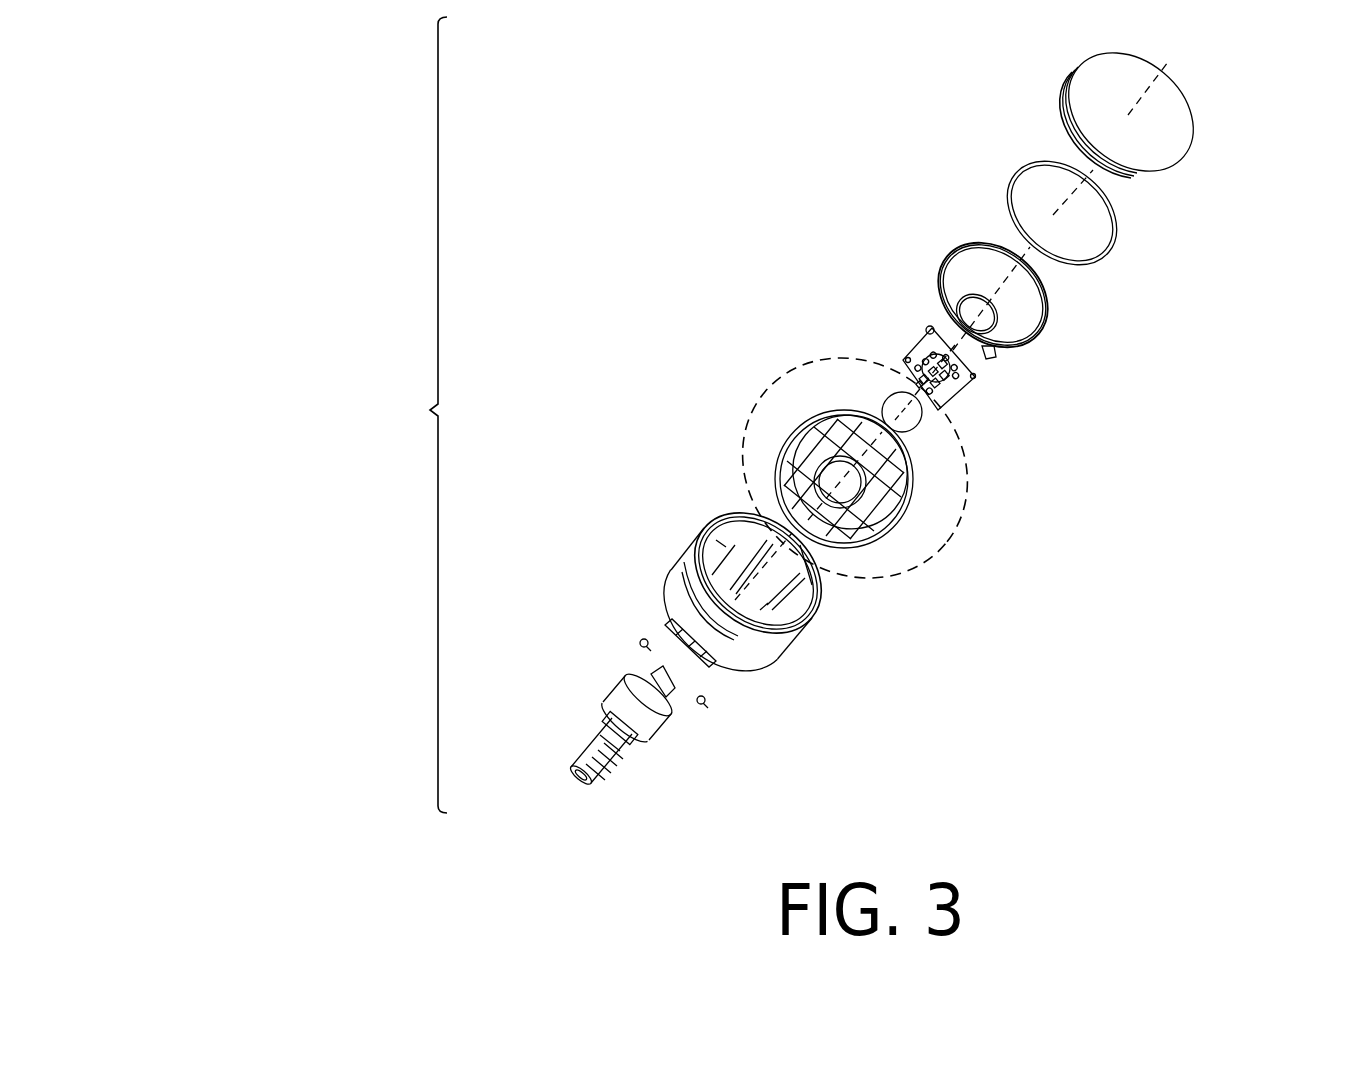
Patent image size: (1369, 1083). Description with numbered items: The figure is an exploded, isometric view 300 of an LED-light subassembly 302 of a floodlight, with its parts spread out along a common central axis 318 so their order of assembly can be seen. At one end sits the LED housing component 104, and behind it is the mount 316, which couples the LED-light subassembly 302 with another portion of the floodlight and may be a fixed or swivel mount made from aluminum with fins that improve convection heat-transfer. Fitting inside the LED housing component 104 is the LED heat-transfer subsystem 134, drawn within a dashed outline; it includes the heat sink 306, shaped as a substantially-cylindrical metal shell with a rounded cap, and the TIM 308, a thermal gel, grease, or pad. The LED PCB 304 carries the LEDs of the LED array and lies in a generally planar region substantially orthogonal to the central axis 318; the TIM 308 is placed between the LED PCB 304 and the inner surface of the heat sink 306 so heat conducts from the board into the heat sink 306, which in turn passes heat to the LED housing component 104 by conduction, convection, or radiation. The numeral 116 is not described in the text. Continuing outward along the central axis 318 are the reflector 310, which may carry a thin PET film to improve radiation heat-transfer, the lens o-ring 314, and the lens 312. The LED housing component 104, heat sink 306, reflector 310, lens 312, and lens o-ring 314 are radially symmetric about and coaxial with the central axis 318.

The exploded, isometric view 300 is at (266, 101).
The LED-light subassembly 302 is at (414, 415).
The LED housing component 104 is at (712, 517).
The LED heat-transfer subsystem 134 is at (772, 372).
The sensor 116 is at (915, 352).
The LED PCB 304 is at (962, 393).
The heat sink 306 is at (880, 530).
The TIM 308 is at (918, 430).
The reflector 310 is at (1040, 332).
The lens 312 is at (1178, 157).
The lens o-ring 314 is at (1097, 260).
The mount 316 is at (660, 735).
The central axis 318 is at (1167, 72).